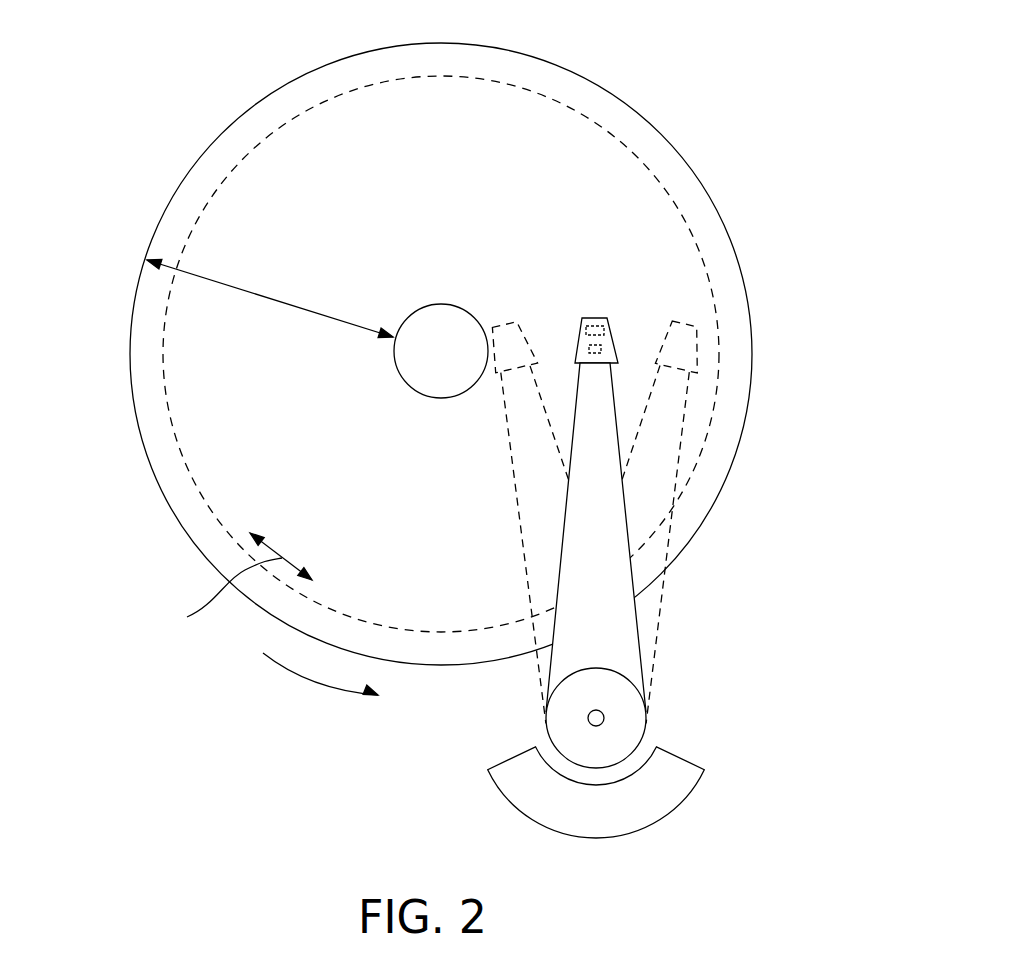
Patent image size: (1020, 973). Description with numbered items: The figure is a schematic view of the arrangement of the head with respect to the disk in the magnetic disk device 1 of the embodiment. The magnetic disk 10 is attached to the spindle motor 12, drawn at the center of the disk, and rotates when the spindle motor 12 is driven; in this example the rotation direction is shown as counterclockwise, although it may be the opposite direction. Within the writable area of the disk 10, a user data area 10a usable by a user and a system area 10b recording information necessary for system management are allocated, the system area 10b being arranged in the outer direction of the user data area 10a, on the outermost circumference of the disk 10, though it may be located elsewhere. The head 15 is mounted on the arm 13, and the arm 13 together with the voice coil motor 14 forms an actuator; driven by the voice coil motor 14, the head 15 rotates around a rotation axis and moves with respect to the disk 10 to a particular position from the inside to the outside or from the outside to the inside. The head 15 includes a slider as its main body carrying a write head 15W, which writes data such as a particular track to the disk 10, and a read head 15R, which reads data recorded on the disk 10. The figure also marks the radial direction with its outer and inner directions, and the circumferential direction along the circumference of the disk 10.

The magnetic disk device 1 is at (705, 62).
The magnetic disk 10 is at (435, 354).
The user data area 10a is at (195, 413).
The system area 10b is at (163, 470).
The spindle motor 12 is at (437, 305).
The arm 13 is at (617, 632).
The voice coil motor 14 is at (688, 756).
The head 15 is at (594, 492).
The write head 15W is at (595, 318).
The read head 15R is at (613, 335).